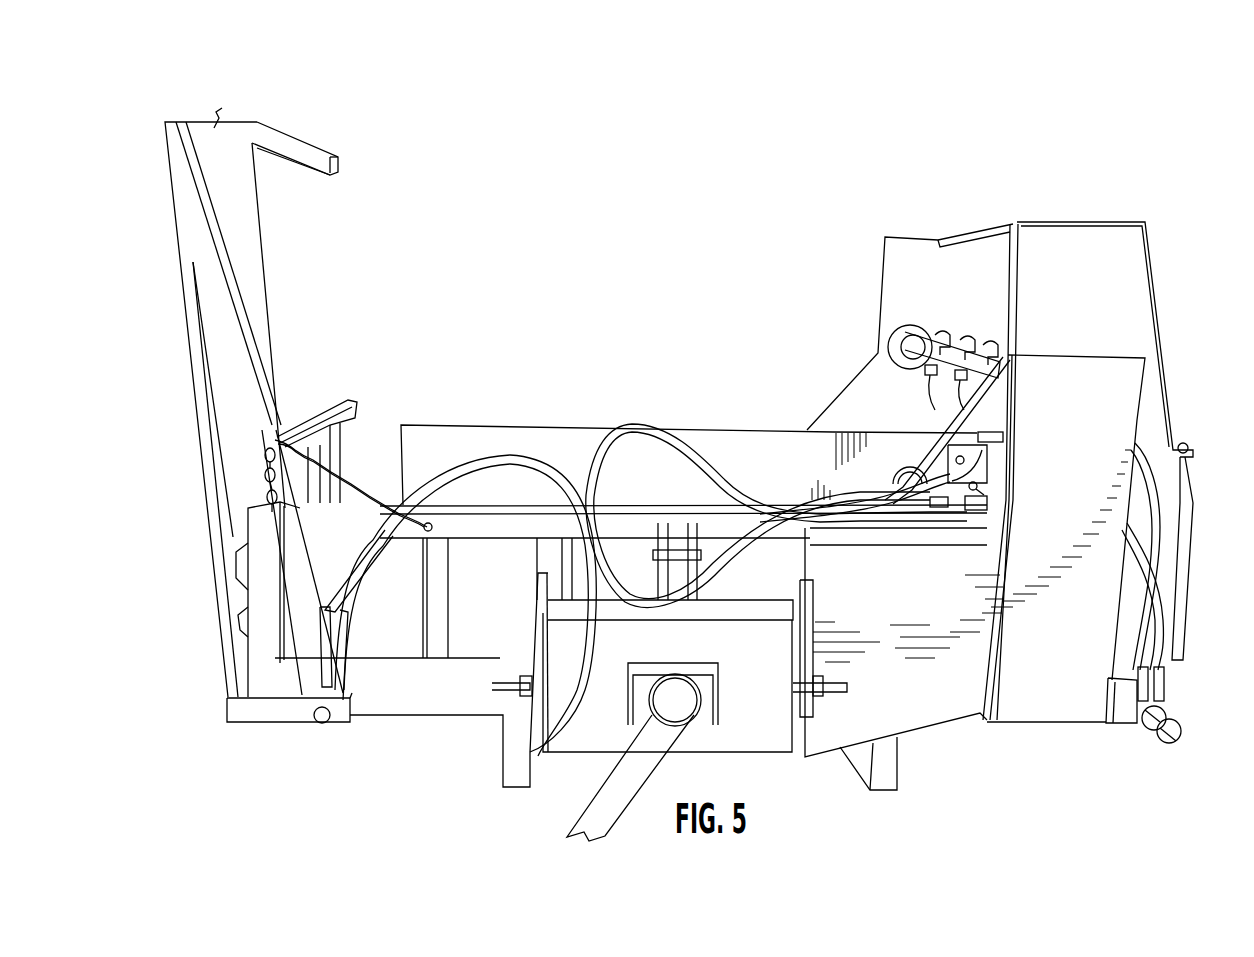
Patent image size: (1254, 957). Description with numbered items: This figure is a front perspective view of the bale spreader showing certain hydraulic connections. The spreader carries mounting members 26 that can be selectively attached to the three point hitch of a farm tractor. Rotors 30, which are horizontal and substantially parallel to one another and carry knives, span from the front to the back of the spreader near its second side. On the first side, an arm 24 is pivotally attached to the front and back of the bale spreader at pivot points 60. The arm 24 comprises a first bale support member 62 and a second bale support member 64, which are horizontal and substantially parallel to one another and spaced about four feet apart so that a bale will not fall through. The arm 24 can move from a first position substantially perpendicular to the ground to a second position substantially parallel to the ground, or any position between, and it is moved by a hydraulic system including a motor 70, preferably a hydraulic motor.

The arm 24 is at (178, 488).
The mounting members 26 is at (685, 560).
The rotors 30 is at (925, 345).
The pivot points 60 is at (332, 720).
The first bale support member 62 is at (308, 152).
The second bale support member 64 is at (357, 403).
The motor 70 is at (1160, 716).